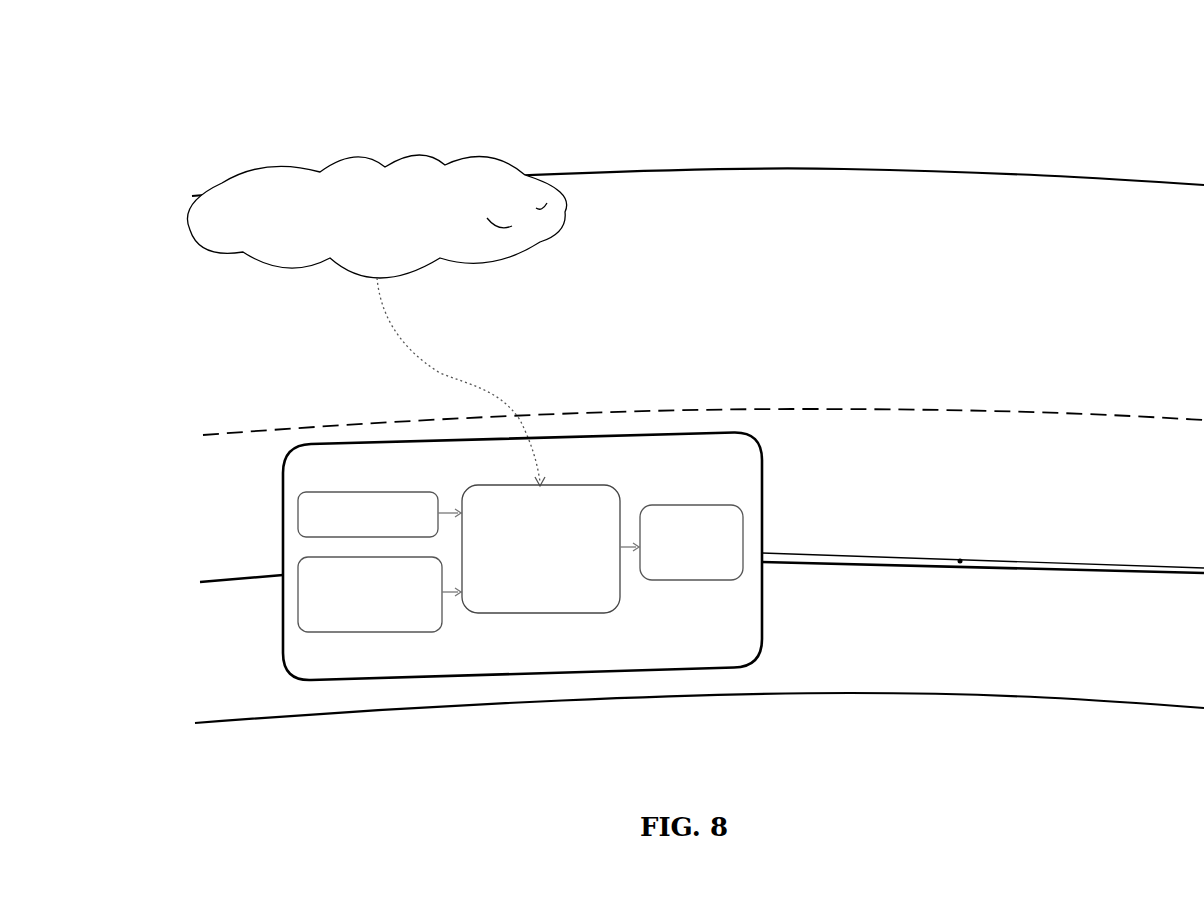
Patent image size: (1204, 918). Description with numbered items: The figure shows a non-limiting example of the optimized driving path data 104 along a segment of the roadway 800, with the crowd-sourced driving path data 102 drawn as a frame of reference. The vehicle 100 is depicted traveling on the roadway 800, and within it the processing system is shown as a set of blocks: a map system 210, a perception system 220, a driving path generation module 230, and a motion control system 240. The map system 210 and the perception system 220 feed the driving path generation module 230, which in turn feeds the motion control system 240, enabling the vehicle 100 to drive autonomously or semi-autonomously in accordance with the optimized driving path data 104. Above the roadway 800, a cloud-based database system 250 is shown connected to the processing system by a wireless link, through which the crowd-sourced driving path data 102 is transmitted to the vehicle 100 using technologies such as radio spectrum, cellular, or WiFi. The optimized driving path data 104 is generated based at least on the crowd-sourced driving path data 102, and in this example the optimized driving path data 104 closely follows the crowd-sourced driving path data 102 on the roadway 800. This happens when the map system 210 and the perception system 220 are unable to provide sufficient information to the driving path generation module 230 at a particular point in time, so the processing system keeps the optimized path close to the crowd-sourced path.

The roadway 800 is at (1110, 148).
The database system 250 is at (367, 235).
The vehicle 100 is at (521, 661).
The map system 210 is at (347, 525).
The perception system 220 is at (352, 605).
The driving path generation module 230 is at (527, 555).
The motion control system 240 is at (679, 558).
The crowd-sourced driving path data 102 is at (864, 575).
The optimized driving path data 104 is at (802, 540).